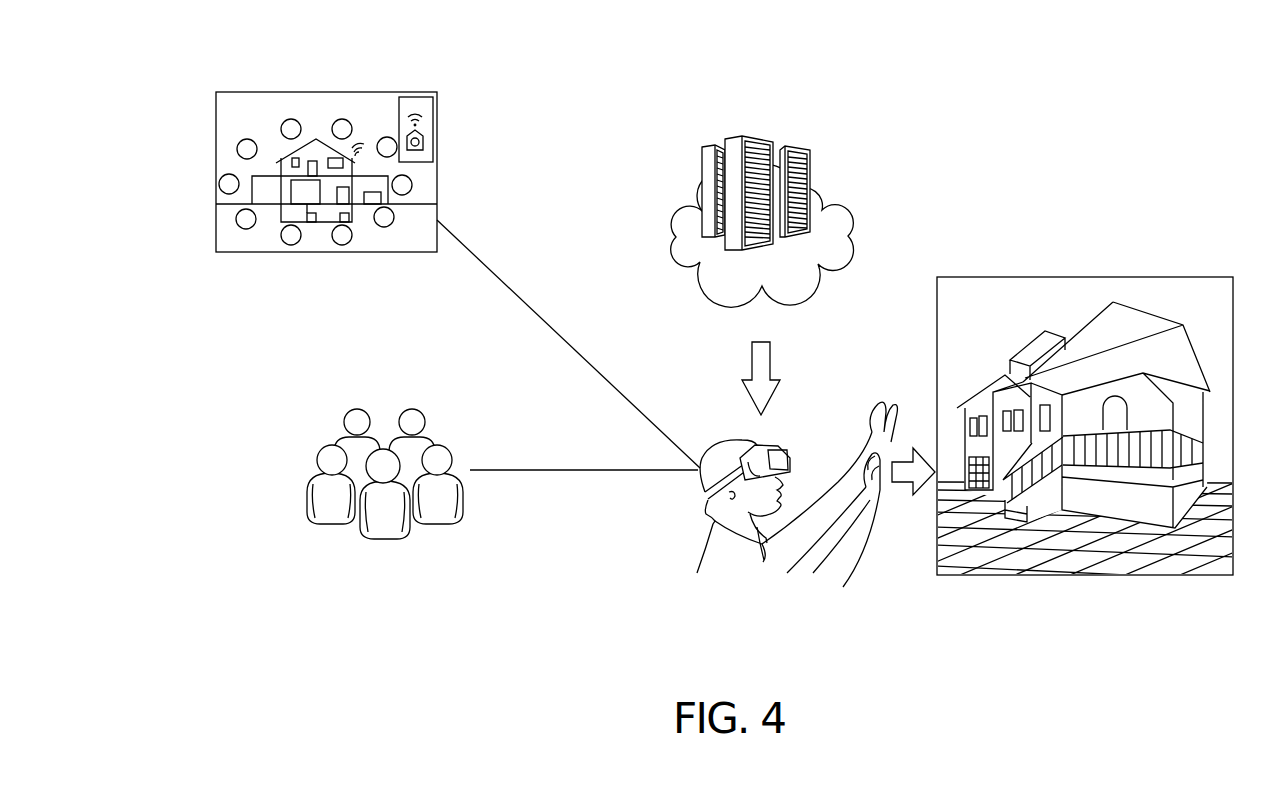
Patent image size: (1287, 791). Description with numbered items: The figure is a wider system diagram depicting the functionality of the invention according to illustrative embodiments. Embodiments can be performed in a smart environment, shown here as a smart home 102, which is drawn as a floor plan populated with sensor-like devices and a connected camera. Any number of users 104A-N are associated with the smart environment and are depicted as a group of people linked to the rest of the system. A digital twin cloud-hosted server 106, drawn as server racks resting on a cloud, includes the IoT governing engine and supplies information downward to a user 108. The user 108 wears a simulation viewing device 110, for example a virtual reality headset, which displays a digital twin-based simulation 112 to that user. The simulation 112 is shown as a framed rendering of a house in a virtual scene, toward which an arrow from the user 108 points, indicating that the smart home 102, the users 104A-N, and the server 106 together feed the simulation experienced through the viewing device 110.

The smart home 102 is at (193, 140).
The users 104A-N is at (298, 442).
The digital twin cloud-hosted server 106 is at (683, 170).
The user 108 is at (797, 494).
The simulation viewing device 110 is at (795, 448).
The digital twin-based simulation 112 is at (1133, 250).